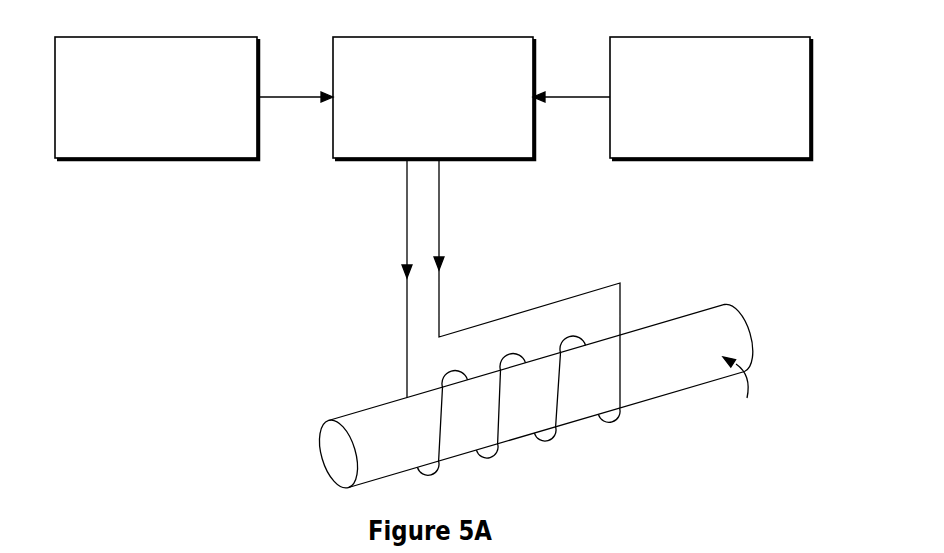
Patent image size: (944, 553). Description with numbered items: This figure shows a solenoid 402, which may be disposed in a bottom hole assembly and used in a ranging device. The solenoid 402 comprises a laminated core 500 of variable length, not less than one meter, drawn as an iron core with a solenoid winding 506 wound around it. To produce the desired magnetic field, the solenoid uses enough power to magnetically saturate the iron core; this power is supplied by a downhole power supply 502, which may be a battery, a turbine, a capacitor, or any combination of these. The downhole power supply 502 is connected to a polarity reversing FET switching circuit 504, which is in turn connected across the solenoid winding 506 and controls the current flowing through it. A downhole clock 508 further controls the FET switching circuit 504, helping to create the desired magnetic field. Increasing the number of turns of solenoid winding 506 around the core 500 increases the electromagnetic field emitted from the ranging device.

The solenoid 402 is at (683, 284).
The laminated core 500 is at (733, 330).
The downhole power supply 502 is at (674, 36).
The FET switching circuit 504 is at (397, 36).
The solenoid winding 506 is at (563, 400).
The downhole clock 508 is at (120, 36).